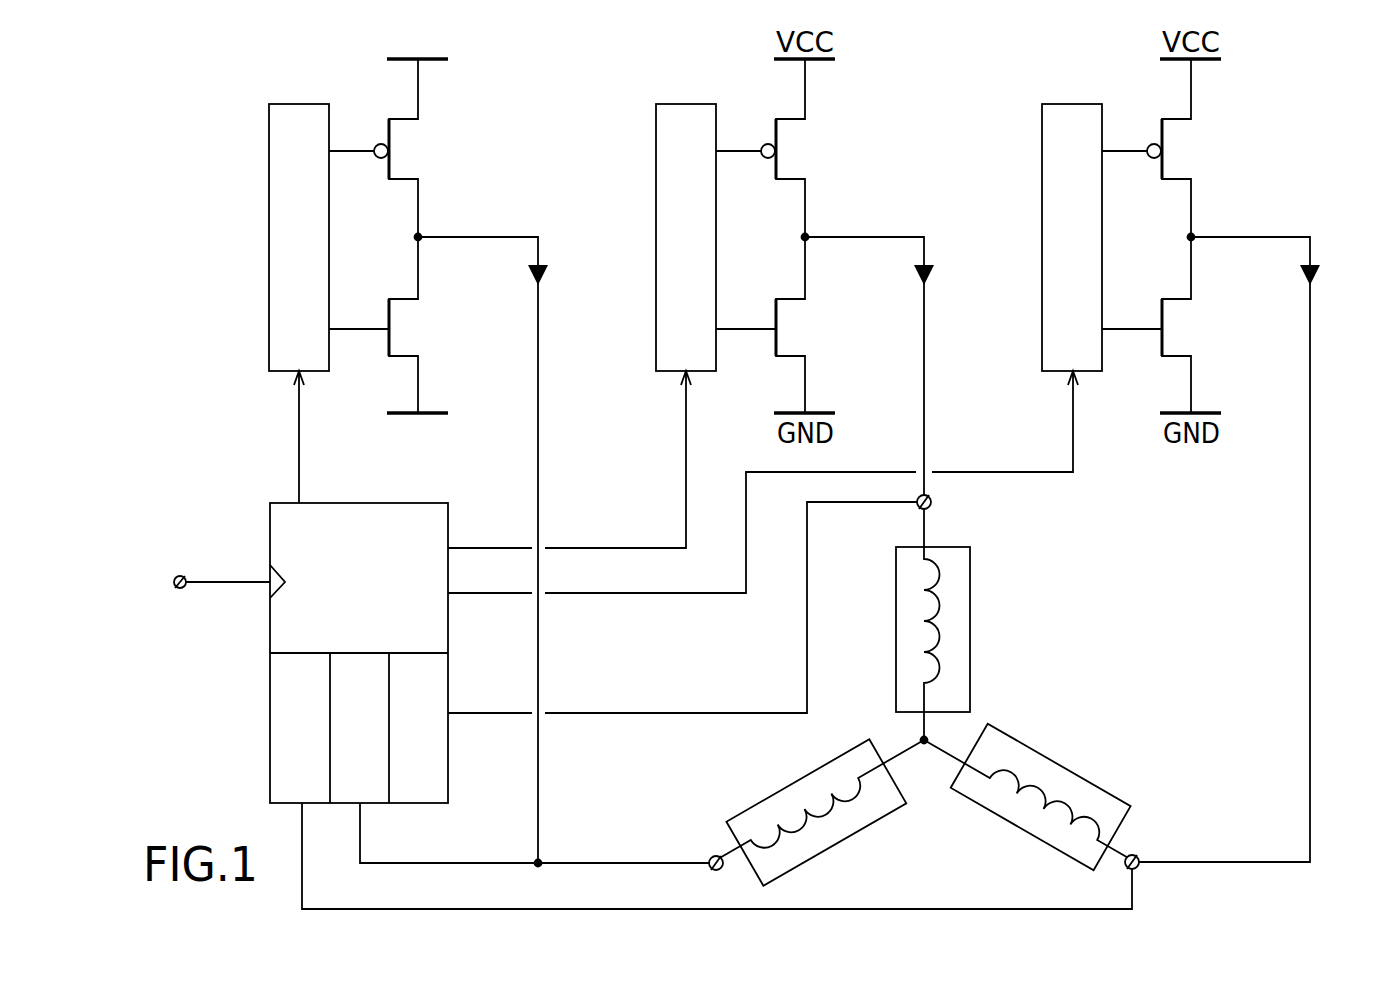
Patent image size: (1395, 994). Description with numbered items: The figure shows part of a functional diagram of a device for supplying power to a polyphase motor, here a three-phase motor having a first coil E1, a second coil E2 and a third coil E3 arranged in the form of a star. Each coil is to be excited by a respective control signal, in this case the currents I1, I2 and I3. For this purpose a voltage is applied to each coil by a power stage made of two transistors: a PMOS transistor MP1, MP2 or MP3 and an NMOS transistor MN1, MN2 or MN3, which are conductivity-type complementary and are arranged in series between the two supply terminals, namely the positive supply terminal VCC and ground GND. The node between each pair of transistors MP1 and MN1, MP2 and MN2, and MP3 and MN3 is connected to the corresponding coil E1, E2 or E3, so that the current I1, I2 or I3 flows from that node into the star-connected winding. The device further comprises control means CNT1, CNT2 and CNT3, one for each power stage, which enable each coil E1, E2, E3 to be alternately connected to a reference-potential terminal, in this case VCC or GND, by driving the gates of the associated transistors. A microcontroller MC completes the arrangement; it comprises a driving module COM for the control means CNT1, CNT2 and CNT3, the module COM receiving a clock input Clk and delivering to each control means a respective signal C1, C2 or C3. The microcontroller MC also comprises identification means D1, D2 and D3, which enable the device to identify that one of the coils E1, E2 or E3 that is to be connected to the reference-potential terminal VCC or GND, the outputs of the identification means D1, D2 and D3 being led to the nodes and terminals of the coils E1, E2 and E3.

The first control means CNT1 is at (313, 104).
The second control means CNT2 is at (700, 104).
The third control means CNT3 is at (1086, 104).
The first PMOS transistor MP1 is at (398, 178).
The second PMOS transistor MP2 is at (785, 178).
The third PMOS transistor MP3 is at (1171, 178).
The first NMOS transistor MN1 is at (398, 356).
The second NMOS transistor MN2 is at (785, 356).
The third NMOS transistor MN3 is at (1171, 356).
The first coil E1 is at (970, 620).
The second coil E2 is at (748, 808).
The third coil E3 is at (1073, 773).
The microcontroller MC is at (654, 705).
The driving module COM is at (360, 580).
The first identification means D1 is at (708, 781).
The second identification means D2 is at (525, 760).
The third identification means D3 is at (658, 625).
The clock input Clk is at (200, 577).
The first control signal C1 is at (276, 437).
The second control signal C2 is at (569, 459).
The third control signal C3 is at (763, 482).
The first control signal I1 is at (499, 549).
The second control signal I2 is at (886, 365).
The third control signal I3 is at (1247, 548).
The positive supply terminal VCC is at (417, 42).
The ground GND is at (417, 431).